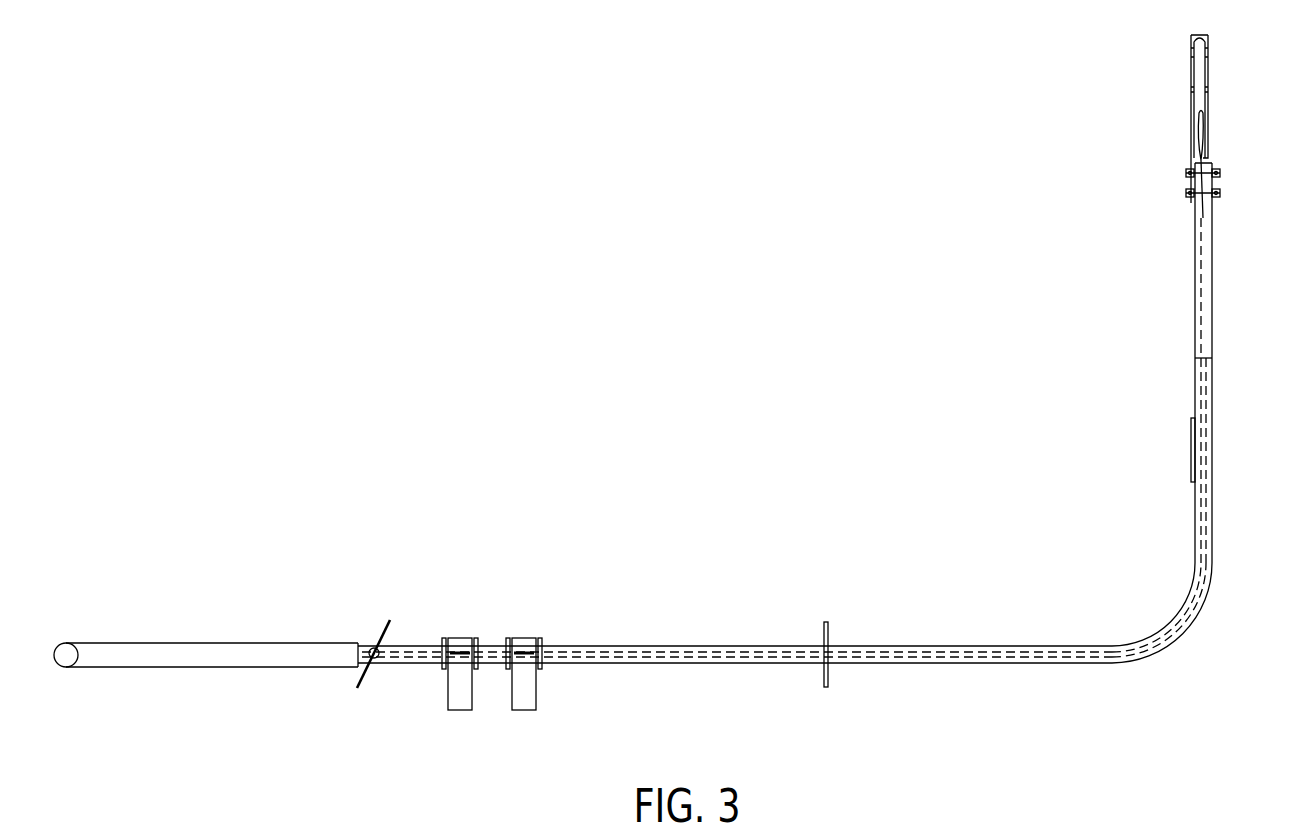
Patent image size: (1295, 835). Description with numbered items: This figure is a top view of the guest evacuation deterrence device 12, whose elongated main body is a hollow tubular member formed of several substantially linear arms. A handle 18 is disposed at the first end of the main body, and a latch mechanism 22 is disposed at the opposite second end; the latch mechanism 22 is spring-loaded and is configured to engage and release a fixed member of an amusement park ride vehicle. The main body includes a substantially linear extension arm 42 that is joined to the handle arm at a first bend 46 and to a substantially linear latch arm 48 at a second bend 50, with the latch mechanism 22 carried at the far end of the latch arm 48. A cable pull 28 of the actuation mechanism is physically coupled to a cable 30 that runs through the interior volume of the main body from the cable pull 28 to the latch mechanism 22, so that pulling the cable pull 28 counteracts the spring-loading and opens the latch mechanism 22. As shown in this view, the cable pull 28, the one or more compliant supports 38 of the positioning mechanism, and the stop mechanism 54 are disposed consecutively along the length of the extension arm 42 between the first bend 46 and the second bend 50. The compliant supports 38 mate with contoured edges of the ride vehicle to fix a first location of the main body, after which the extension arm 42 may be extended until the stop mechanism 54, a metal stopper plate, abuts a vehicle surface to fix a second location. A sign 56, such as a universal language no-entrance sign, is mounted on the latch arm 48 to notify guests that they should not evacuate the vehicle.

The guest evacuation deterrence device 12 is at (540, 308).
The handle 18 is at (66, 643).
The latch mechanism 22 is at (1208, 97).
The cable pull 28 is at (386, 625).
The cable 30 is at (888, 651).
The compliant supports 38 is at (460, 637).
The extension arm 42 is at (683, 646).
The first bend 46 is at (152, 668).
The latch arm 48 is at (1195, 385).
The second bend 50 is at (1190, 628).
The stop mechanism 54 is at (824, 626).
The sign 56 is at (1191, 462).